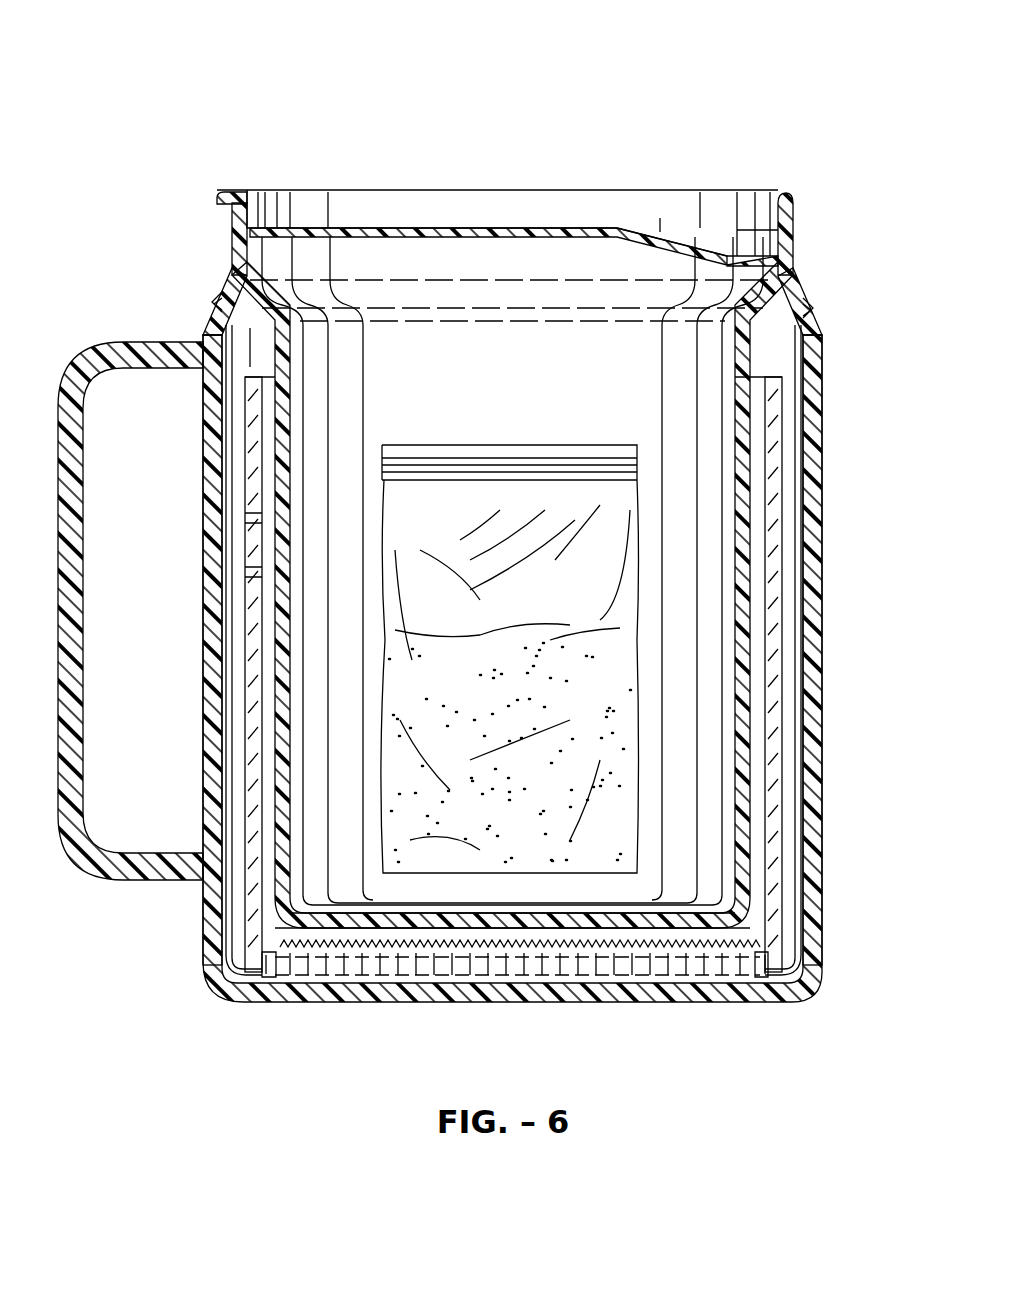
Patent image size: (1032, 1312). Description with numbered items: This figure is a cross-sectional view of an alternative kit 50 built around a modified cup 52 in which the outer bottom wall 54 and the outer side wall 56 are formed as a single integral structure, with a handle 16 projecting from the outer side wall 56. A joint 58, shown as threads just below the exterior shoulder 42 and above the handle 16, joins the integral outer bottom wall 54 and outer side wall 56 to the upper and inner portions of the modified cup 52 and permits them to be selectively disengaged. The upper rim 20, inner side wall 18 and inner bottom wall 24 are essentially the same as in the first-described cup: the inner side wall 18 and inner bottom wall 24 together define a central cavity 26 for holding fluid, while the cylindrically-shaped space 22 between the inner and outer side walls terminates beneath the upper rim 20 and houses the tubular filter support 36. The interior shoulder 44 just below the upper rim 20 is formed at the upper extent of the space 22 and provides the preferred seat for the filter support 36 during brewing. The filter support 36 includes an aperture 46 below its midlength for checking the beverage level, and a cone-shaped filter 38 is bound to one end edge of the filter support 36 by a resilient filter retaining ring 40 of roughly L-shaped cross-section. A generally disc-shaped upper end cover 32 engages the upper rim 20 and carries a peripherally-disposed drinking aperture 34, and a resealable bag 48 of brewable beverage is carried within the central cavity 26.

The alternative kit 50 is at (350, 88).
The modified cup 52 is at (857, 847).
The outer side wall 56 is at (205, 727).
The handle 16 is at (132, 345).
The exterior shoulder 42 is at (216, 278).
The joint 58 is at (214, 307).
The upper rim 20 is at (788, 214).
The upper end cover 32 is at (413, 205).
The drinking aperture 34 is at (757, 248).
The interior shoulder 44 is at (288, 330).
The inner side wall 18 is at (332, 418).
The central cavity 26 is at (712, 777).
The inner bottom wall 24 is at (385, 918).
The cylindrically-shaped space 22 is at (233, 440).
The filter support 36 is at (247, 648).
The aperture 46 is at (255, 540).
The cone-shaped filter 38 is at (505, 962).
The outer bottom wall 54 is at (648, 990).
The filter retaining ring 40 is at (762, 972).
The resealable bag 48 is at (490, 472).